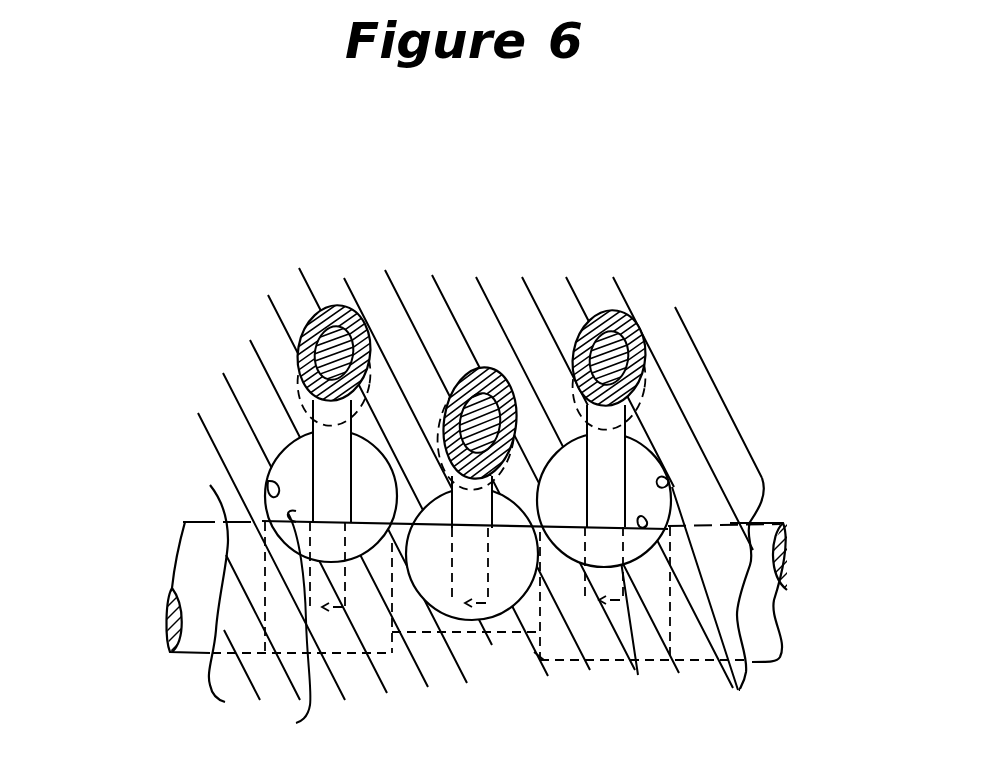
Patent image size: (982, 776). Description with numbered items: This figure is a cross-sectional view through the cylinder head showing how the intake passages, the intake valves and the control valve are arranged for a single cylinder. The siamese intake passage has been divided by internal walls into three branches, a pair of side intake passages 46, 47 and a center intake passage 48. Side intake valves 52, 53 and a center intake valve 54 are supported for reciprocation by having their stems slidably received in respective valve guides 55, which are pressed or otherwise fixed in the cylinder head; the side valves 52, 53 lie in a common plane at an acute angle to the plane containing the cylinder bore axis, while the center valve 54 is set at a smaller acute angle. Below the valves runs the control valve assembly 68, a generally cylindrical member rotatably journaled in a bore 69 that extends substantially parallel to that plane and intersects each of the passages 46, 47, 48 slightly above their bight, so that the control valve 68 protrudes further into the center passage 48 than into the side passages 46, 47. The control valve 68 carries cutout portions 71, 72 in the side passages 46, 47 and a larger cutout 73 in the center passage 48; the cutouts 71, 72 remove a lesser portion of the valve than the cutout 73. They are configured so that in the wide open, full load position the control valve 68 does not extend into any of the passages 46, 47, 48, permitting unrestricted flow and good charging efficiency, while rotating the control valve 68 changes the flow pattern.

The side intake passage 46 is at (670, 480).
The side intake passage 47 is at (268, 481).
The center intake passage 48 is at (433, 603).
The side intake valve 52 is at (622, 460).
The side intake valve 53 is at (280, 452).
The center intake valve 54 is at (437, 455).
The valve guide 55 is at (640, 327).
The control valve assembly 68 is at (150, 595).
The bore 69 is at (775, 515).
The cutout portion 71 is at (652, 548).
The cutout portion 72 is at (302, 634).
The cutout 73 is at (510, 518).